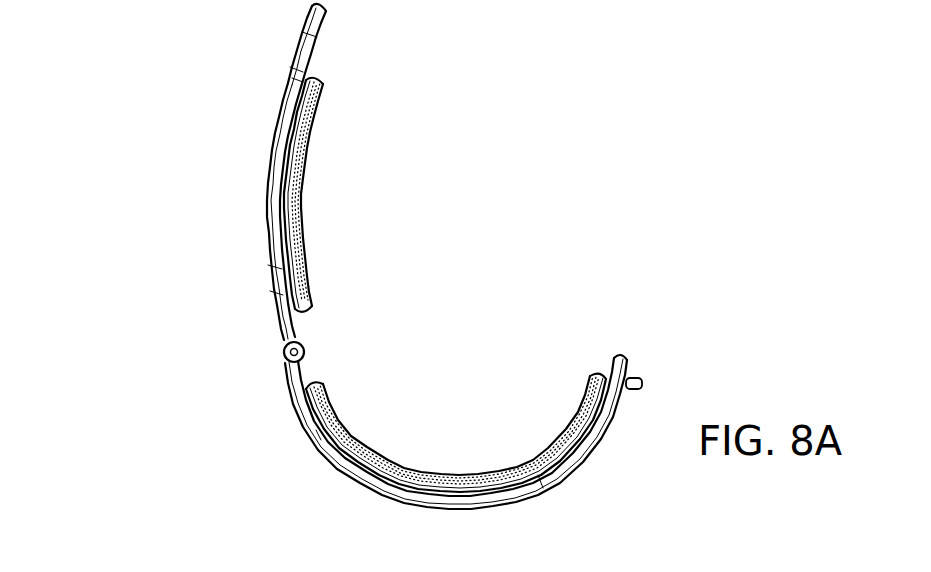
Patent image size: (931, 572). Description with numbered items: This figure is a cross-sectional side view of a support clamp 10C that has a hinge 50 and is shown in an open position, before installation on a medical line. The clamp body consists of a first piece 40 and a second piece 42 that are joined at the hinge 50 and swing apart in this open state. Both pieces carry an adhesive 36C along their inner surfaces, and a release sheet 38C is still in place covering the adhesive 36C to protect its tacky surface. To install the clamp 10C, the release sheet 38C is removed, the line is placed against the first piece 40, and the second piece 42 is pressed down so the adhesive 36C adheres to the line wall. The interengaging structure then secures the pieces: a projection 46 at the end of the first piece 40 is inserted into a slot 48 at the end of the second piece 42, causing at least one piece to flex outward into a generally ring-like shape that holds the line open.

The support clamp 10C is at (160, 218).
The adhesive 36C is at (312, 76).
The release sheet 38C is at (304, 153).
The first piece 40 is at (453, 503).
The second piece 42 is at (268, 183).
The projection 46 is at (645, 387).
The slot 48 is at (310, 38).
The hinge 50 is at (283, 352).